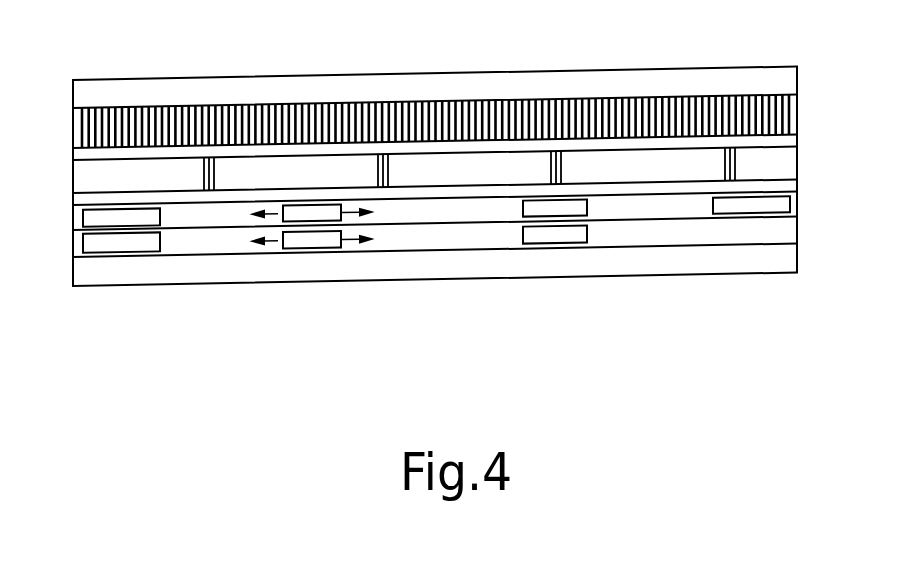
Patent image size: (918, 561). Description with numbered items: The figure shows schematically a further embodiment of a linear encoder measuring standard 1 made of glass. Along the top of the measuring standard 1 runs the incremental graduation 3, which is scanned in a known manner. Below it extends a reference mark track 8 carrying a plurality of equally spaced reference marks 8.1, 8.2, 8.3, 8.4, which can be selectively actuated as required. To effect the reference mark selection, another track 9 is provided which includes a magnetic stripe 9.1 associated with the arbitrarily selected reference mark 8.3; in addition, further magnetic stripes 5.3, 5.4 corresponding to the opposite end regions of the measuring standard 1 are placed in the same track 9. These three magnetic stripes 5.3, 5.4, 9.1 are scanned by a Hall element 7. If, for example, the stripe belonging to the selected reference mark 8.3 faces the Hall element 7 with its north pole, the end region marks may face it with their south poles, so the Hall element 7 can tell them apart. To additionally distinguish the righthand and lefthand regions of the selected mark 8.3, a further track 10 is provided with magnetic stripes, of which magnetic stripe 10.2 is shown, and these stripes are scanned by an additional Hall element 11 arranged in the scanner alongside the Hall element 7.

The measuring standard 1 is at (74, 277).
The incremental graduation 3 is at (794, 108).
The reference mark track 8 is at (794, 167).
The reference mark 8.1 is at (212, 158).
The reference mark 8.2 is at (383, 154).
The reference mark 8.3 is at (556, 151).
The reference mark 8.4 is at (733, 148).
The track 9 is at (795, 211).
The further track 10 is at (793, 232).
The magnetic stripe 5.3 is at (88, 224).
The magnetic stripe 5.4 is at (723, 210).
The Hall element 7 is at (305, 217).
The additional Hall element 11 is at (332, 243).
The magnetic stripe 9.1 is at (528, 212).
The magnetic stripe 10.2 is at (583, 240).